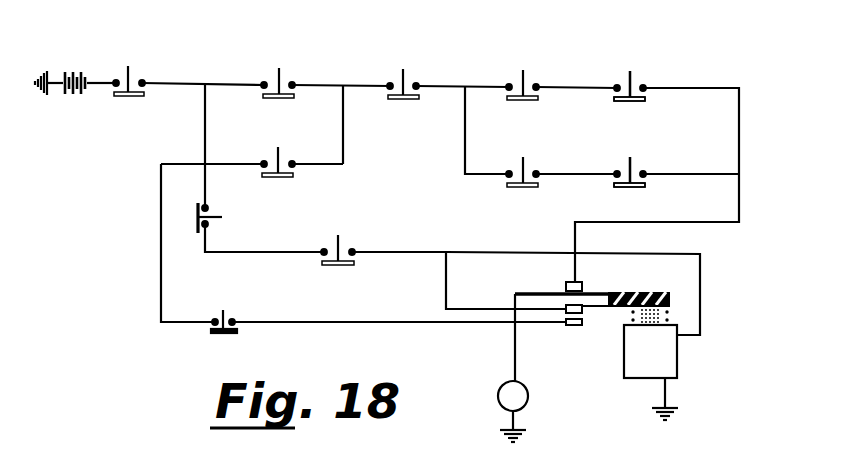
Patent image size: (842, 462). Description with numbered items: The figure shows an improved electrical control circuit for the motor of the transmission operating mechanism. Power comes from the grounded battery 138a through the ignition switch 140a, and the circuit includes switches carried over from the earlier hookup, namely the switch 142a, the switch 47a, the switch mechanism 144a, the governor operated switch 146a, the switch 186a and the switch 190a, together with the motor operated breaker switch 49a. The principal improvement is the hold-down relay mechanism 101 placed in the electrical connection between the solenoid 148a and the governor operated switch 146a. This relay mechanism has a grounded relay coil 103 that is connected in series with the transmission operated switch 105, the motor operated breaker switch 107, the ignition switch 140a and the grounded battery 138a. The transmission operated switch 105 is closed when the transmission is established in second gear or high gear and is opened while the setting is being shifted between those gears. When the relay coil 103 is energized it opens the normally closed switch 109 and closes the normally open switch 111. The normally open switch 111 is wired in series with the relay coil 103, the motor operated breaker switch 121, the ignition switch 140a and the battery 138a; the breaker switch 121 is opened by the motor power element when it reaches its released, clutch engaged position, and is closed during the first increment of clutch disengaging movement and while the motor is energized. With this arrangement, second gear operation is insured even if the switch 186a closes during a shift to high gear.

The grounded battery 138a is at (70, 66).
The ignition switch 140a is at (133, 72).
The switch 142a is at (290, 70).
The switch 47a is at (397, 105).
The switch mechanism 144a is at (523, 108).
The governor operated switch 146a is at (637, 108).
The switch 186a is at (640, 64).
The switch 190a is at (637, 185).
The motor operated breaker switch 49a is at (275, 180).
The motor operated breaker switch 107 is at (195, 229).
The transmission operated switch 105 is at (335, 266).
The motor operated breaker switch 121 is at (232, 334).
The normally closed switch 109 is at (585, 287).
The hold-down relay mechanism 101 is at (600, 318).
The normally open switch 111 is at (565, 318).
The grounded relay coil 103 is at (677, 358).
The solenoid 148a is at (527, 396).